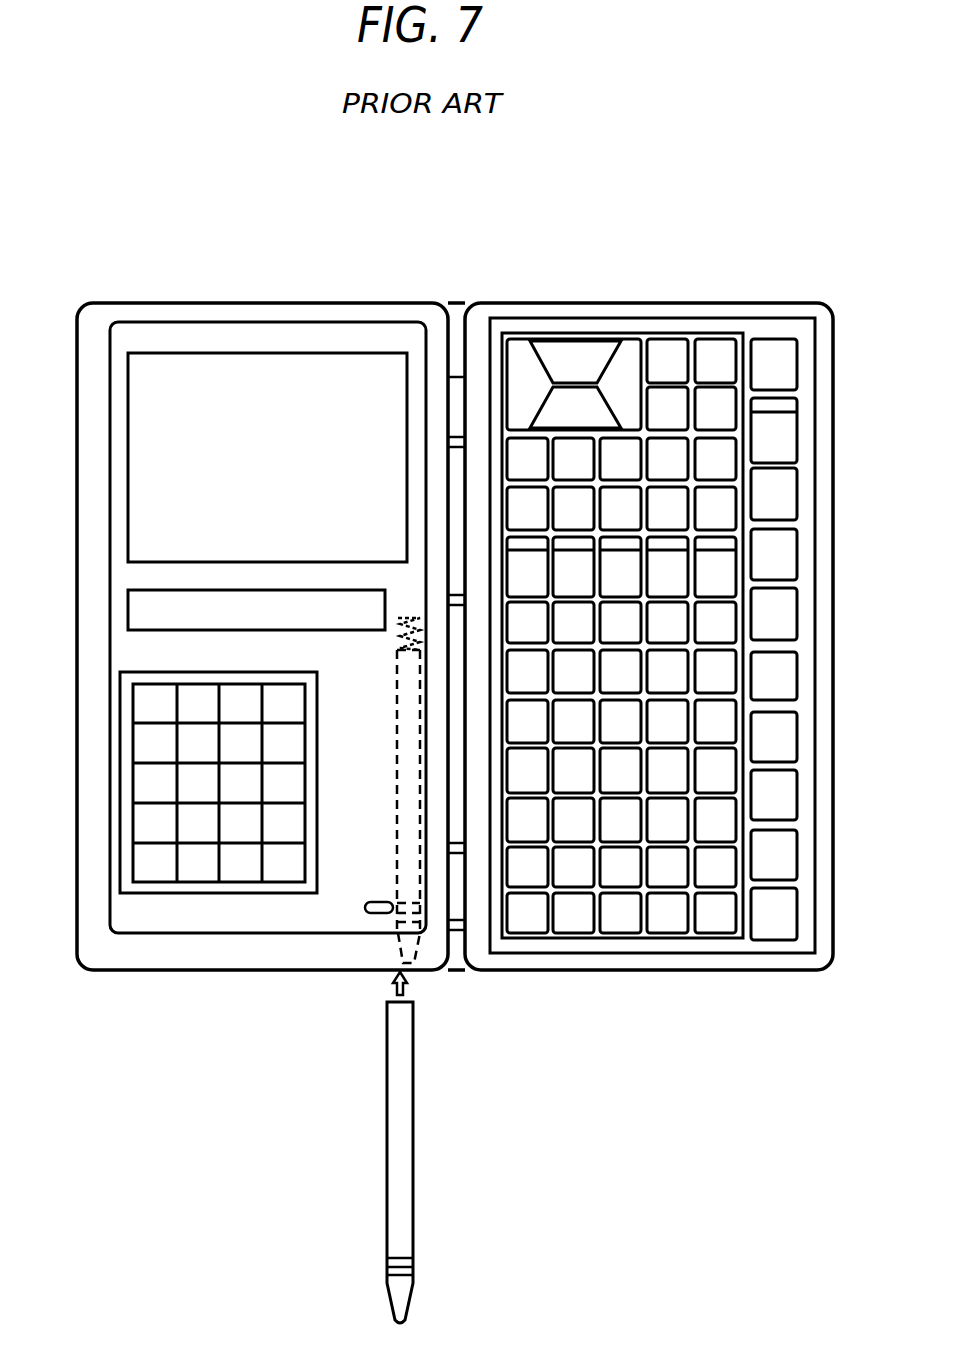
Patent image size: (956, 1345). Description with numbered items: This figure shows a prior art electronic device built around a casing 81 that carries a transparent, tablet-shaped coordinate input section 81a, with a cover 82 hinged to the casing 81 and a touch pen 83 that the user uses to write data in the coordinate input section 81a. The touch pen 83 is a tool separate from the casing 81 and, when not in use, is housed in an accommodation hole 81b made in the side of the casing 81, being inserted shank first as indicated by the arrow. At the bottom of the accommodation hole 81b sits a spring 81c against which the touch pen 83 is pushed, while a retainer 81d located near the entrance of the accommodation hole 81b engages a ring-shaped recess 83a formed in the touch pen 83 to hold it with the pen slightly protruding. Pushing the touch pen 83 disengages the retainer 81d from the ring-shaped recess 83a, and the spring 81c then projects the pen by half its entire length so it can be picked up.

The casing 81 is at (410, 303).
The transparent coordinate input section 81a is at (217, 370).
The accommodation hole 81b is at (393, 844).
The spring 81c is at (398, 640).
The retainer 81d is at (365, 907).
The cover 82 is at (672, 303).
The touch pen 83 is at (395, 1120).
The ring-shaped recess 83a is at (412, 1272).